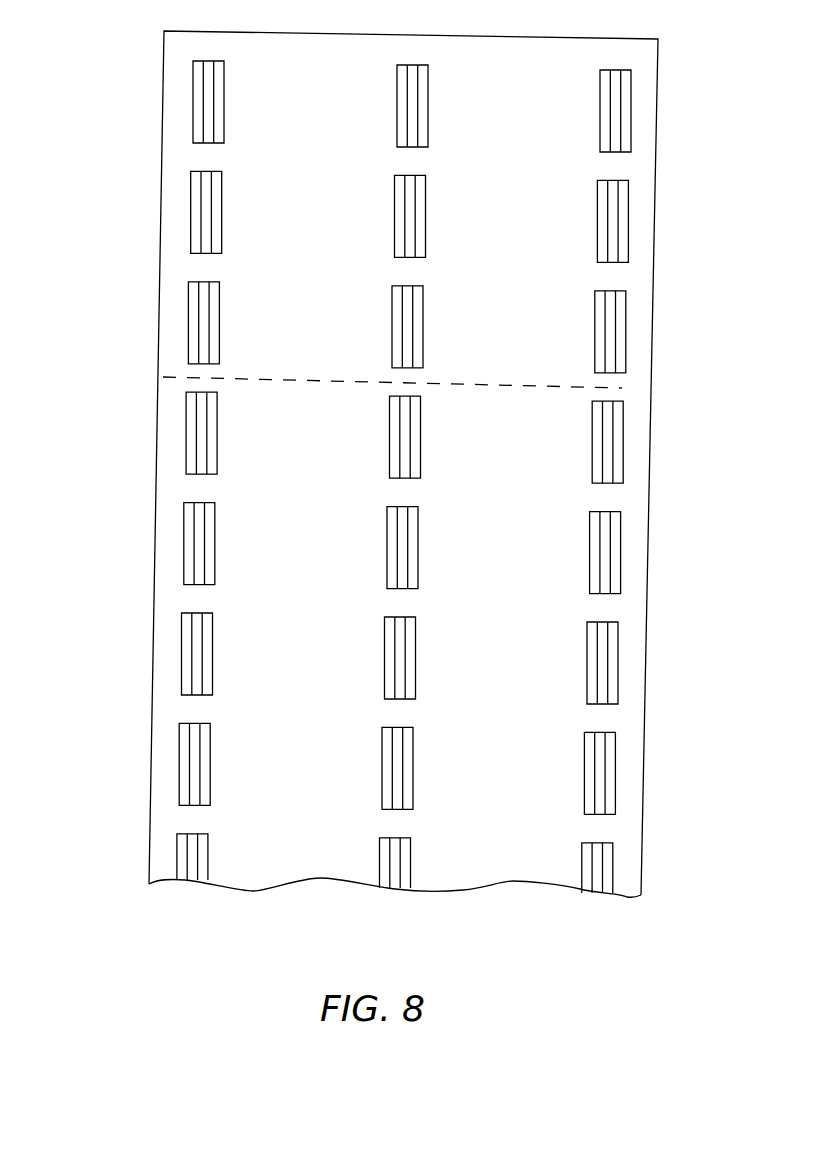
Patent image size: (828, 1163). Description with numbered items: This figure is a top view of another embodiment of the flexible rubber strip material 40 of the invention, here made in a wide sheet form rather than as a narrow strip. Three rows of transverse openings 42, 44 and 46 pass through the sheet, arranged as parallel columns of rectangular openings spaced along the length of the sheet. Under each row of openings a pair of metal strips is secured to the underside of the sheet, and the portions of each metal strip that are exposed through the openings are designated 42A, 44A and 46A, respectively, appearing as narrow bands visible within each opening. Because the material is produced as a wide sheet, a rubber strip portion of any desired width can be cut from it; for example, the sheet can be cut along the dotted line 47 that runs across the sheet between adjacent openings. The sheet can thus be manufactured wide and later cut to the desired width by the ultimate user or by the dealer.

The rubber strip material 40 is at (528, 33).
The transverse openings 42 is at (615, 79).
The exposed metal strip portions 42A is at (625, 113).
The transverse openings 44 is at (412, 68).
The exposed metal strip portions 44A is at (422, 118).
The transverse openings 46 is at (206, 62).
The exposed metal strip portions 46A is at (217, 115).
The dotted line 47 is at (632, 389).